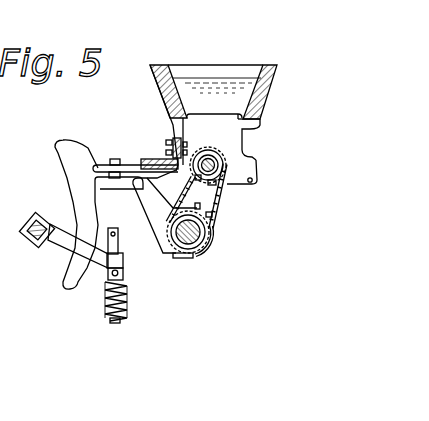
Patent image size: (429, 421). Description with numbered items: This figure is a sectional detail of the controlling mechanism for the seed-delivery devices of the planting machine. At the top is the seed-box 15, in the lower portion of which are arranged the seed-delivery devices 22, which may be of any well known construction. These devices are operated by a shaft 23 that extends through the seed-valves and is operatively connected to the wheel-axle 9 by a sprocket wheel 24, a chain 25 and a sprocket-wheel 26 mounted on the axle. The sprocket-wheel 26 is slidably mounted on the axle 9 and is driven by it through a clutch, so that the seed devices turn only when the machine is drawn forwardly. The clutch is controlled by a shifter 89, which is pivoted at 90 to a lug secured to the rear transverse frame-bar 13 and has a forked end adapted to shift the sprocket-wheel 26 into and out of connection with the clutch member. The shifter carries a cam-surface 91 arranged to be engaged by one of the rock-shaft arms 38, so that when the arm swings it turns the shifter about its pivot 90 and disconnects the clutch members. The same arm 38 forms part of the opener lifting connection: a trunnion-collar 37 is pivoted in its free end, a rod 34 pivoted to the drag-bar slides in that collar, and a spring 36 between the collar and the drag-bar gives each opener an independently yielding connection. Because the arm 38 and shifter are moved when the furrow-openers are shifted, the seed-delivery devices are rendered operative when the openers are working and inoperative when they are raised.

The seed-box 15 is at (275, 85).
The seed-delivery devices 22 is at (232, 142).
The sprocket wheel 24 is at (237, 168).
The shafts 23 is at (225, 175).
The chain 25 is at (232, 206).
The axle or shaft 9 is at (207, 233).
The sprocket-wheel 26 is at (210, 250).
The shifter 89 is at (168, 146).
The rear transverse bar 13 is at (146, 162).
The pivot 90 is at (124, 157).
The cam-surface 91 is at (66, 188).
The rock-shaft arm 38 is at (53, 255).
The trunnion-collar 37 is at (126, 272).
The spring 36 is at (130, 294).
The rod 34 is at (122, 319).